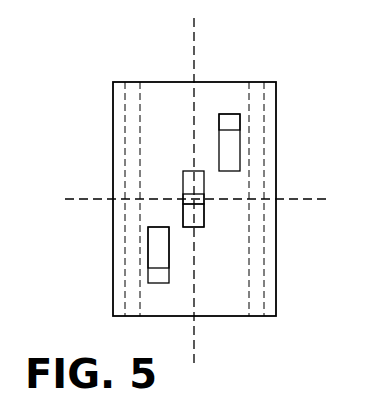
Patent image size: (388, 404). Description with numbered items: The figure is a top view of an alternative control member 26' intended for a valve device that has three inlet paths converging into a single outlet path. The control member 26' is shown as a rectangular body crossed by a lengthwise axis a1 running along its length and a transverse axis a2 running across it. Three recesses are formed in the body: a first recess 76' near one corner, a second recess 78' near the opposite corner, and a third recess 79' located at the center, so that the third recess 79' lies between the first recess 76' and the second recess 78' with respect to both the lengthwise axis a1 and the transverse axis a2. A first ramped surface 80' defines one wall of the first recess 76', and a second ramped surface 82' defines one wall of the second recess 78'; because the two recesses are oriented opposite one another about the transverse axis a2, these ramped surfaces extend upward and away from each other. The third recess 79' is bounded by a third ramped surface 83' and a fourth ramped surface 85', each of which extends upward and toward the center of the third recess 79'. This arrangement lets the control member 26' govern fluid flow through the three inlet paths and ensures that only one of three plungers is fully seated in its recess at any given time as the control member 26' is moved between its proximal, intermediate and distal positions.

The control member 26' is at (154, 199).
The first recess 76' is at (113, 262).
The second recess 78' is at (278, 124).
The third recess 79' is at (134, 181).
The first ramped surface 80' is at (113, 247).
The second ramped surface 82' is at (278, 142).
The third ramped surface 83' is at (279, 199).
The fourth ramped surface 85' is at (262, 252).
The lengthwise axis a1 is at (194, 348).
The transverse axis a2 is at (312, 200).